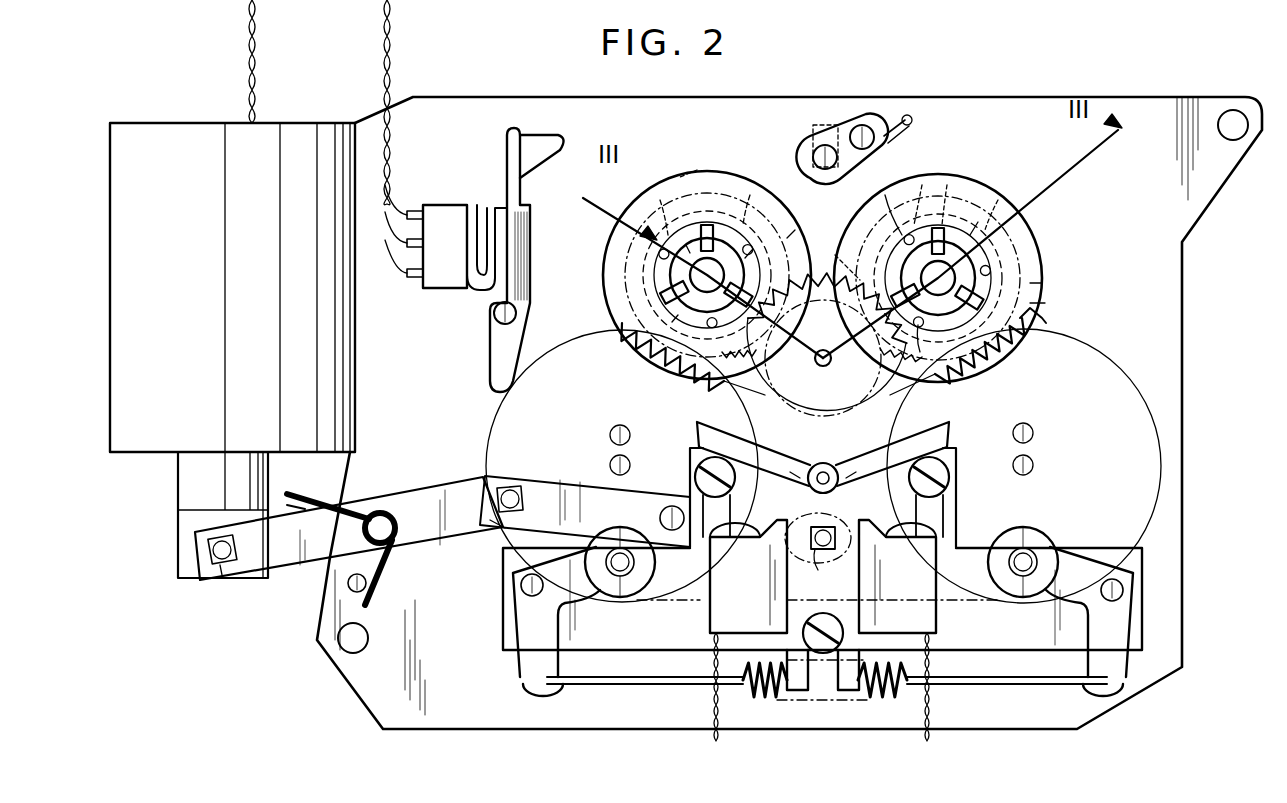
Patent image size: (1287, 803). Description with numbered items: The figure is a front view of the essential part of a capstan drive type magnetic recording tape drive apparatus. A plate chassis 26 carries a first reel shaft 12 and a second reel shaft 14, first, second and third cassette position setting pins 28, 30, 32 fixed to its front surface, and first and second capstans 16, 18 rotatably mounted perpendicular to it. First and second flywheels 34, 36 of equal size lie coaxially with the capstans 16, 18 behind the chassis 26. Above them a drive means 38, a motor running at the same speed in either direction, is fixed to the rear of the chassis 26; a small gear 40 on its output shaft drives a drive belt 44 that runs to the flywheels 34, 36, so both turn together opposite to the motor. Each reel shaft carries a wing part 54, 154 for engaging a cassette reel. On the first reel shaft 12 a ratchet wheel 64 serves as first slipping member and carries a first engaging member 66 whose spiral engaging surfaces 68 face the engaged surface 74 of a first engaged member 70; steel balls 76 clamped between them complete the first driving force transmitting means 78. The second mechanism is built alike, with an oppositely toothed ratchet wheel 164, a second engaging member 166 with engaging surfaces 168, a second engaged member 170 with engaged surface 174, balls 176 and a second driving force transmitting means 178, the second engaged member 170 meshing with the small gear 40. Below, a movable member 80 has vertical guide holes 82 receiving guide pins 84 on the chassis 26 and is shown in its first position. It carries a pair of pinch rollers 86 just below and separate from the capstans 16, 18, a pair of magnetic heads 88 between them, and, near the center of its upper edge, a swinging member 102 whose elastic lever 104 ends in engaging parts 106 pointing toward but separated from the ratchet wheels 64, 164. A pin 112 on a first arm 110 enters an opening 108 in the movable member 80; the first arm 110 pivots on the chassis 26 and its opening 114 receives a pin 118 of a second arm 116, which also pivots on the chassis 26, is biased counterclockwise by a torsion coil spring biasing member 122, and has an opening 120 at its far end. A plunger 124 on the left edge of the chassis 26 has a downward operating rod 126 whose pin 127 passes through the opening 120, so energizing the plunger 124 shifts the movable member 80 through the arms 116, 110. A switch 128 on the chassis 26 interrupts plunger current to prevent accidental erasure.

The first reel shaft 12 is at (718, 232).
The second reel shaft 14 is at (978, 260).
The first capstan 16 is at (630, 465).
The second capstan 18 is at (1033, 465).
The chassis 26 is at (1045, 106).
The first cassette position setting pin 28 is at (835, 178).
The second cassette position setting pin 30 is at (630, 435).
The third cassette position setting pin 32 is at (1033, 433).
The first flywheel 34 is at (557, 354).
The second flywheel 36 is at (1116, 384).
The drive means 38 is at (825, 410).
The small gear 40 is at (787, 395).
The drive belt 44 is at (730, 390).
The wing part 54 is at (668, 292).
The ratchet wheel 64 is at (640, 355).
The first engaging member 66 is at (750, 195).
The engaging surfaces 68 is at (686, 245).
The first engaged member 70 is at (795, 230).
The engaged surface 74 is at (660, 200).
The balls 76 is at (659, 255).
The first driving force transmitting means 78 is at (655, 210).
The movable member 80 is at (1130, 643).
The guide holes 82 is at (712, 540).
The guide pins 84 is at (695, 480).
The pinch rollers 86 is at (625, 592).
The magnetic heads 88 is at (714, 623).
The swinging member 102 is at (795, 478).
The lever 104 is at (851, 478).
The engaging parts 106 is at (699, 440).
The opening 108 is at (825, 570).
The first arm 110 is at (560, 494).
The pin 112 is at (820, 527).
The opening 114 is at (506, 485).
The second arm 116 is at (425, 496).
The pin 118 is at (500, 528).
The opening 120 is at (222, 575).
The biasing member 122 is at (318, 498).
The plunger 124 is at (188, 123).
The operating rod 126 is at (180, 487).
The pin 127 is at (232, 548).
The switch 128 is at (463, 198).
The wing part 154 is at (1000, 352).
The ratchet wheel 164 is at (1055, 322).
The second engaging member 166 is at (967, 219).
The engaging surface 168 is at (945, 224).
The second engaged member 170 is at (1059, 304).
The engaged surface 174 is at (962, 189).
The balls 176 is at (1042, 265).
The second driving force transmitting means 178 is at (1010, 202).